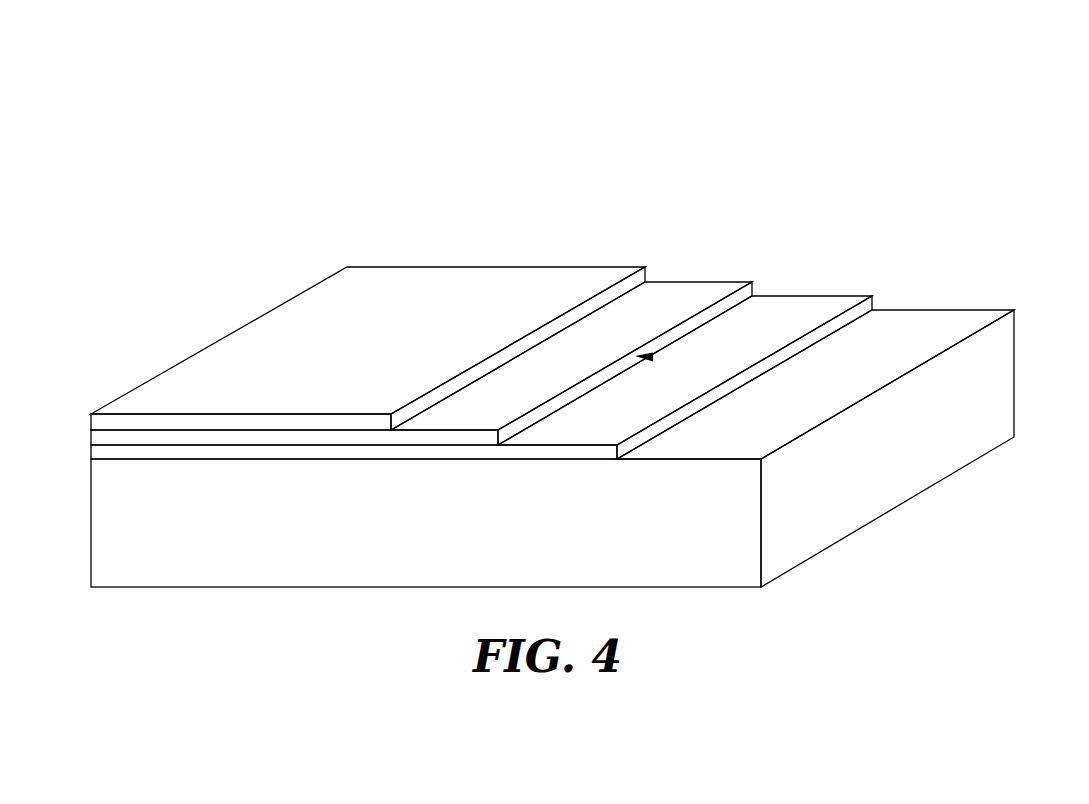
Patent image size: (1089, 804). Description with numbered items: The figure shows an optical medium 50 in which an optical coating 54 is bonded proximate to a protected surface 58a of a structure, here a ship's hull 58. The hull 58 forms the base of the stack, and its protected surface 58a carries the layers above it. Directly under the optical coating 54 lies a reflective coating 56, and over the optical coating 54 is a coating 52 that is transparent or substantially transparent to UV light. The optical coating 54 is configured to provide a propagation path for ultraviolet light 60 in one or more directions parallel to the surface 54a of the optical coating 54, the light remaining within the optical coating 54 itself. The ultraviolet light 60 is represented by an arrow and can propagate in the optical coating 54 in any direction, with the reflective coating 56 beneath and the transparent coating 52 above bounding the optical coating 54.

The optical medium 50 is at (812, 142).
The coating 52 is at (482, 266).
The optical coating 54 is at (725, 282).
The surface of the optical coating 54a is at (668, 289).
The reflective coating 56 is at (820, 297).
The ship's hull 58 is at (1014, 368).
The protected surface 58a is at (943, 317).
The ultraviolet light 60 is at (652, 357).